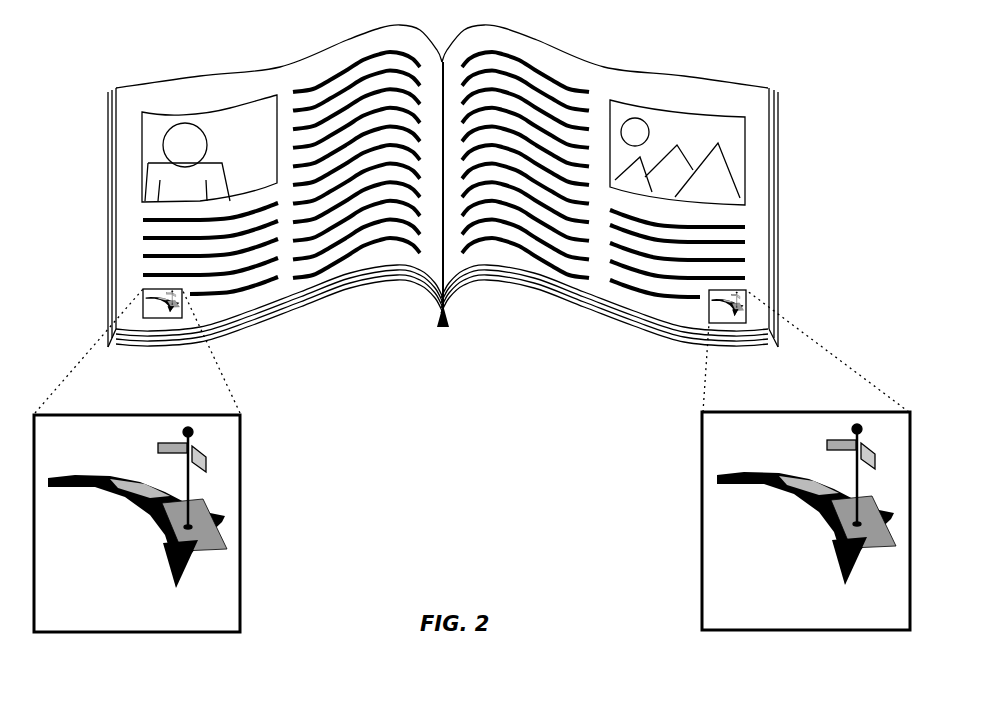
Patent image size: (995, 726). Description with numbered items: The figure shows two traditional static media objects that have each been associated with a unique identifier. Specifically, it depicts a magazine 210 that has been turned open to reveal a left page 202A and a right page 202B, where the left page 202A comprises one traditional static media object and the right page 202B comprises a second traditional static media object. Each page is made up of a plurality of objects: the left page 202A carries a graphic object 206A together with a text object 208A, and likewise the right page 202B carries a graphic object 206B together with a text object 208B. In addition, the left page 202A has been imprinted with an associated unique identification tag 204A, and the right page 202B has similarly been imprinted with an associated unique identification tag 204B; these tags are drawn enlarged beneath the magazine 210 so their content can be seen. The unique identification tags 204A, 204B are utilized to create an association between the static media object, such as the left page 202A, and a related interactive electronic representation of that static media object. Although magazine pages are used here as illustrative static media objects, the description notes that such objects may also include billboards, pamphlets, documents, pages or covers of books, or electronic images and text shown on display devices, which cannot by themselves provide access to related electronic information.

The magazine 210 is at (803, 194).
The left page 202A is at (127, 103).
The right page 202B is at (755, 102).
The unique identification tag 204A is at (177, 618).
The unique identification tag 204B is at (762, 612).
The graphic object 206A is at (277, 117).
The graphic object 206B is at (622, 110).
The text object 208A is at (318, 268).
The text object 208B is at (549, 255).